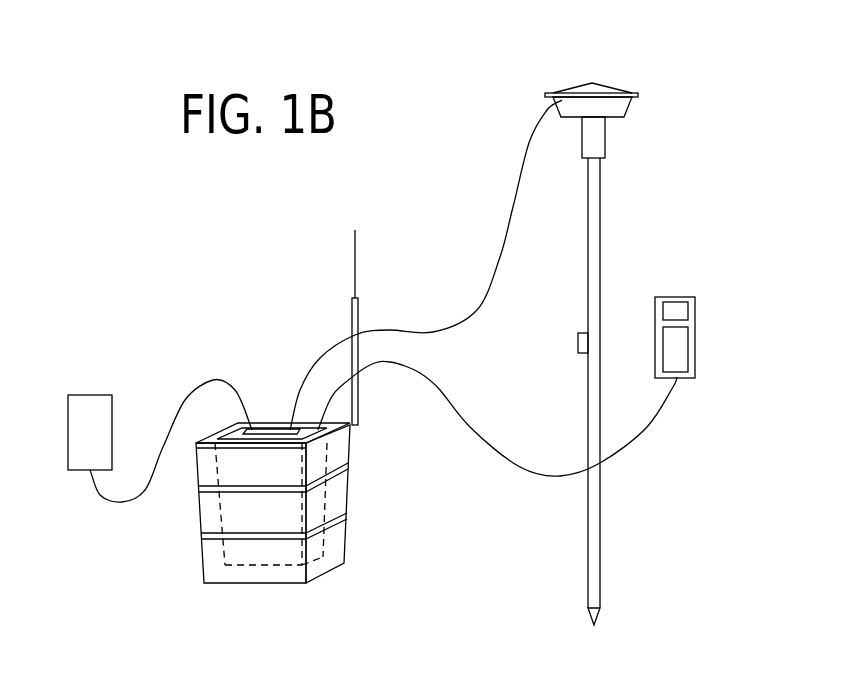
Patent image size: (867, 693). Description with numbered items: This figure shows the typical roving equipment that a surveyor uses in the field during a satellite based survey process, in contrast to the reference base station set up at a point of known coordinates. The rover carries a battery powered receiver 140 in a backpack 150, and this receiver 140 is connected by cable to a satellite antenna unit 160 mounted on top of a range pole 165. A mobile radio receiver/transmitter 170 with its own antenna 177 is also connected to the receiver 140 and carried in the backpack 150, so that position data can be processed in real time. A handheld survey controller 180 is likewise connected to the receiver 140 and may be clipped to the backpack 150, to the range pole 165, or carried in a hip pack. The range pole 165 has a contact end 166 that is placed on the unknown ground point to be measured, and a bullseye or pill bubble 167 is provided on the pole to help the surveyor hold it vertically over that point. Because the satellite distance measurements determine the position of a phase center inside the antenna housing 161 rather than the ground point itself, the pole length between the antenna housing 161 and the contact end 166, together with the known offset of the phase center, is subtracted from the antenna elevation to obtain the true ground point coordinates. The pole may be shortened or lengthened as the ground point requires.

The receiver 140 is at (235, 510).
The backpack 150 is at (324, 573).
The satellite antenna unit 160 is at (613, 88).
The antenna housing 161 is at (635, 110).
The range pole 165 is at (600, 227).
The contact end 166 is at (600, 612).
The bullseye or pill bubble 167 is at (578, 343).
The mobile radio receiver/transmitter 170 is at (90, 395).
The antenna 177 is at (355, 253).
The handheld survey controller 180 is at (695, 337).